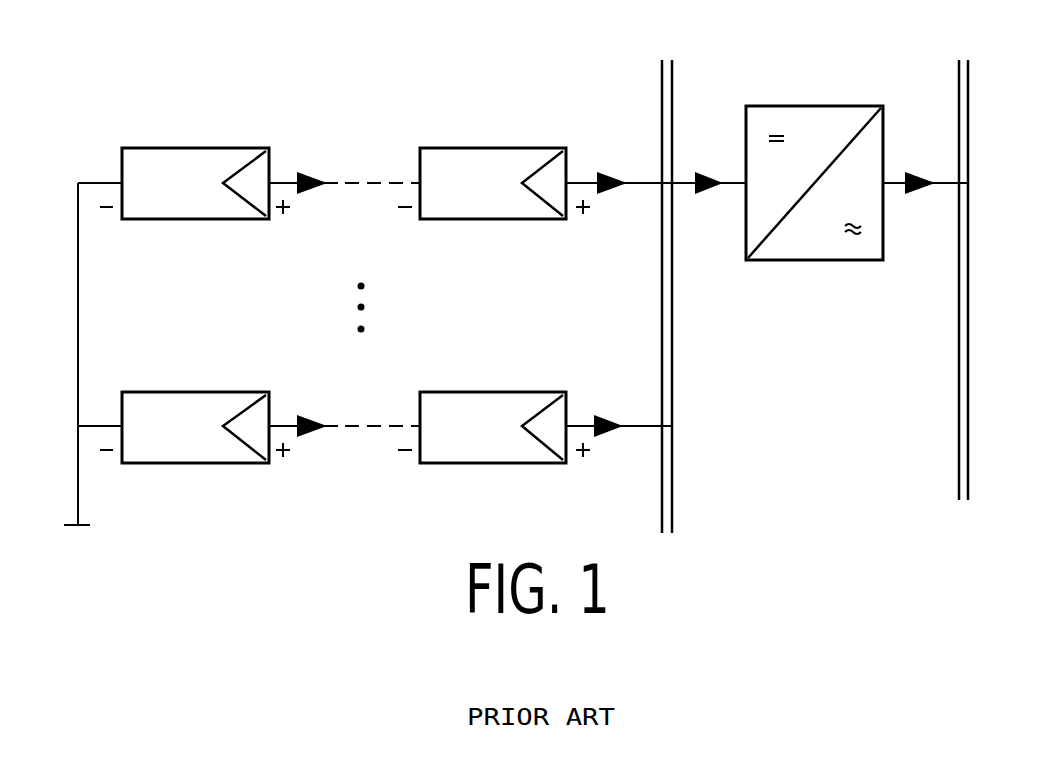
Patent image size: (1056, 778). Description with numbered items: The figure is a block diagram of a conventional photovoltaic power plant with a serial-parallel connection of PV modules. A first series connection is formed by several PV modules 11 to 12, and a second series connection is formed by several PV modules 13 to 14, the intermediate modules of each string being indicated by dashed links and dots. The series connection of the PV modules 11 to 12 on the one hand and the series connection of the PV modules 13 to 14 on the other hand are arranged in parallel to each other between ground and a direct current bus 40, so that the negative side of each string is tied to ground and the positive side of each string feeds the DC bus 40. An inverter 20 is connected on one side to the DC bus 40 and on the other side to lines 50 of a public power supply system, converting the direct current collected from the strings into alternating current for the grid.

The PV module 11 is at (196, 148).
The PV module 12 is at (494, 148).
The PV module 13 is at (196, 392).
The PV module 14 is at (494, 392).
The inverter 20 is at (813, 106).
The direct current (DC) bus 40 is at (672, 382).
The lines of a public power supply system 50 is at (970, 268).